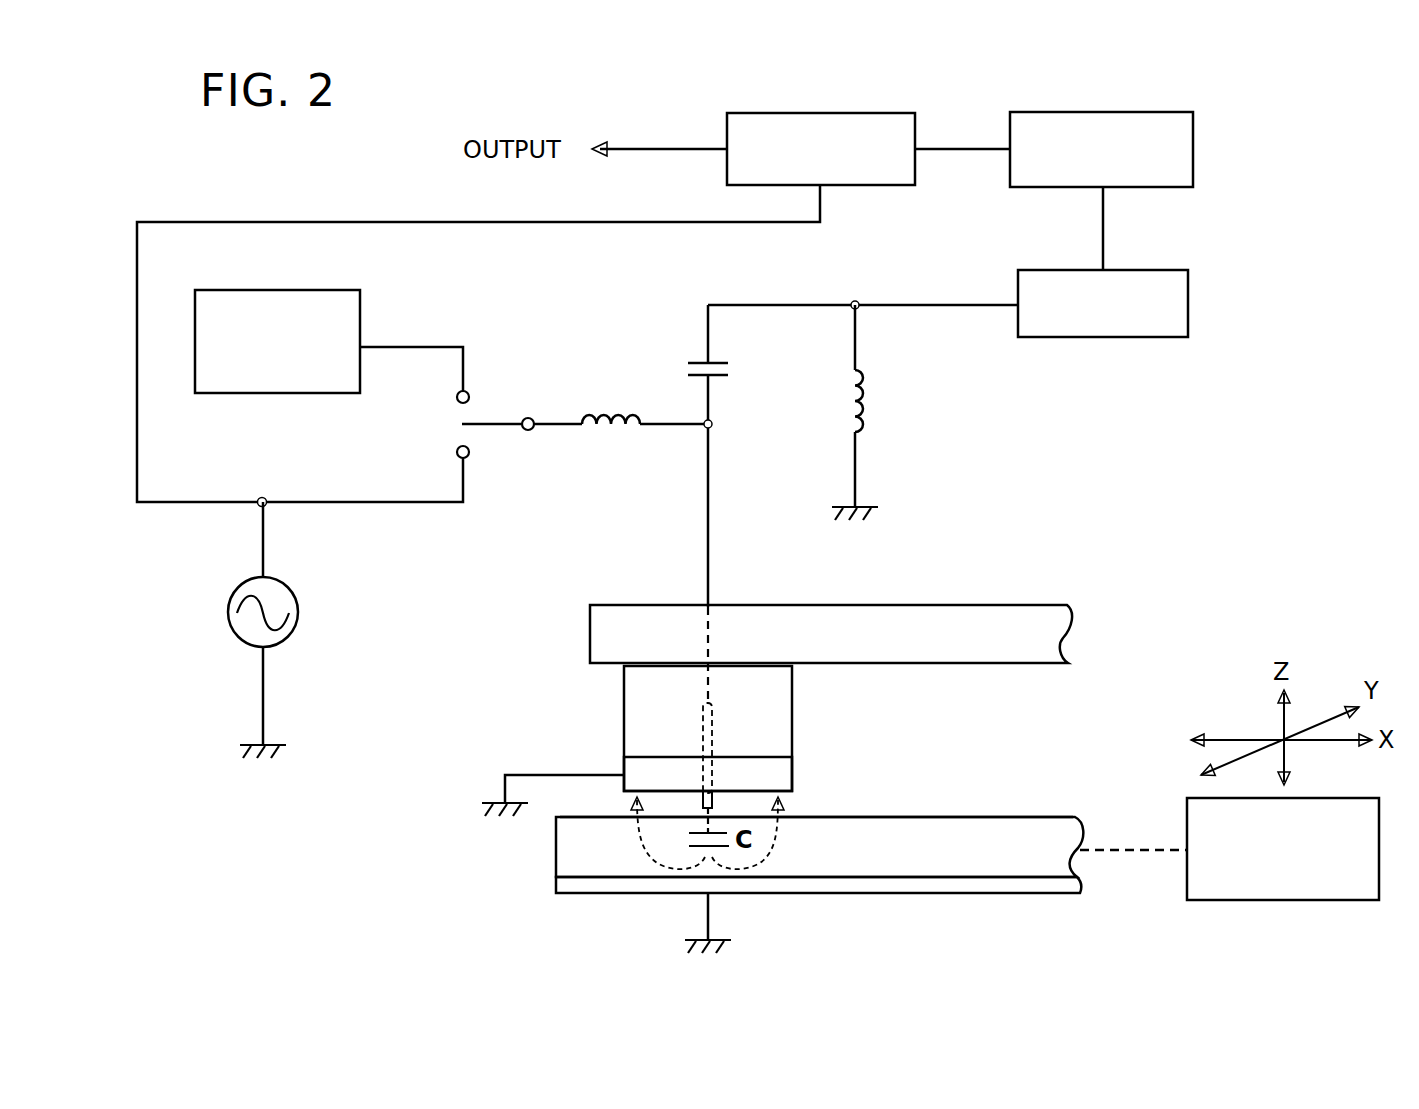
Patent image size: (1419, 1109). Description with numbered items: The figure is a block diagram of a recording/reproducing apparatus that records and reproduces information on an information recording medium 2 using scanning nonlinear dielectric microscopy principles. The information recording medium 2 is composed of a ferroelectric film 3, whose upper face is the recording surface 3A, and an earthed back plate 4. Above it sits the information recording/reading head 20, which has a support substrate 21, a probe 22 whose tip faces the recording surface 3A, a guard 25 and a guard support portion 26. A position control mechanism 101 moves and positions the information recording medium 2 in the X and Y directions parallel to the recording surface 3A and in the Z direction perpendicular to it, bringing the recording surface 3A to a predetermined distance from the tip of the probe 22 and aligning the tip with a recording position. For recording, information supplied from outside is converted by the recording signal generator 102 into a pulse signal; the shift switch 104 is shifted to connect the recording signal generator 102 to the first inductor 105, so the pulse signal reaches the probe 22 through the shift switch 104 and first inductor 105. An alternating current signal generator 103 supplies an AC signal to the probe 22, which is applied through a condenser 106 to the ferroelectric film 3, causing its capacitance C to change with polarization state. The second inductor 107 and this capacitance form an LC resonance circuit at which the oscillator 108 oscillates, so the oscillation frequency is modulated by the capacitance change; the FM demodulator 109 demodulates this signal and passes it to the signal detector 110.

The information recording medium 2 is at (847, 852).
The ferroelectric film 3 is at (847, 851).
The recording surface 3A is at (998, 817).
The back plate 4 is at (797, 887).
The information recording/reading head 20 is at (821, 609).
The support substrate 21 is at (597, 633).
The probe 22 is at (714, 718).
The guard 25 is at (783, 770).
The guard support portion 26 is at (625, 725).
The position control mechanism 101 is at (1289, 900).
The recording signal generator 102 is at (265, 290).
The alternating current (AC) signal generator 103 is at (228, 605).
The shift switch 104 is at (478, 422).
The first inductor 105 is at (607, 436).
The condenser 106 is at (688, 363).
The second inductor 107 is at (845, 402).
The oscillator 108 is at (1188, 295).
The frequency modulation (FM) demodulator 109 is at (1193, 140).
The signal detector 110 is at (883, 113).